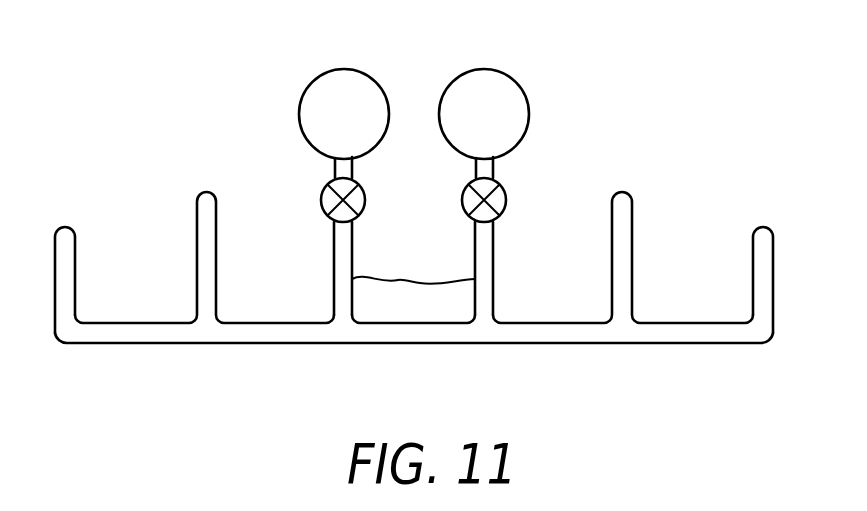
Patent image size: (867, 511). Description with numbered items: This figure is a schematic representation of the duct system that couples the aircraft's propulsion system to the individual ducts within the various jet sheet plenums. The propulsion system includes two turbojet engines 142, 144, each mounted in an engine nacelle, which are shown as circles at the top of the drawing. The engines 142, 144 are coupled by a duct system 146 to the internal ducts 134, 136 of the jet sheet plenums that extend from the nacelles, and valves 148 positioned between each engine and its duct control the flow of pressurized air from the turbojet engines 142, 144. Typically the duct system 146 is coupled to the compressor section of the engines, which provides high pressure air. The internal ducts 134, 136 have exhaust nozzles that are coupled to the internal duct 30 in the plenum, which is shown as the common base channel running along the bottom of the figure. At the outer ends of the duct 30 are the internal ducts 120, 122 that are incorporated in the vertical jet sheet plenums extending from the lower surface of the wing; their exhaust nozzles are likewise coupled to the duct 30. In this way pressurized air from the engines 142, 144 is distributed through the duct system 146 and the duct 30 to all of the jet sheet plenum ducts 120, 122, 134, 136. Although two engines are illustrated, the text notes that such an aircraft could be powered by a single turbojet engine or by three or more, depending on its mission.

The internal duct 30 is at (233, 343).
The internal duct 120 is at (78, 250).
The internal duct 122 is at (752, 253).
The internal duct 134 is at (216, 268).
The internal duct 136 is at (612, 268).
The turbojet engine 142 is at (306, 88).
The turbojet engine 144 is at (522, 90).
The duct system 146 is at (400, 279).
The valves 148 is at (321, 189).